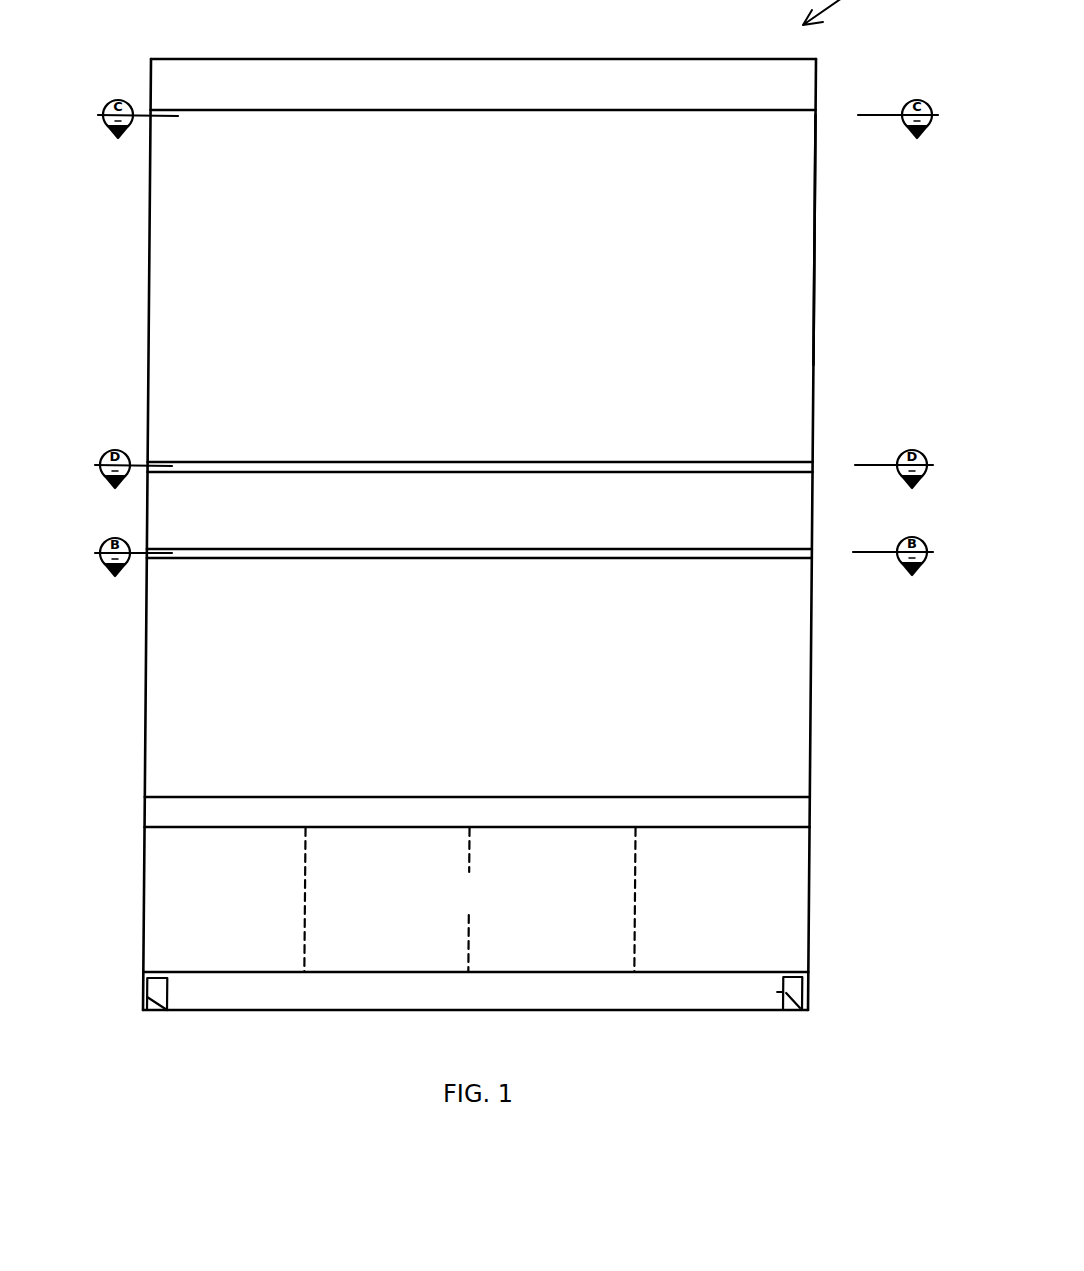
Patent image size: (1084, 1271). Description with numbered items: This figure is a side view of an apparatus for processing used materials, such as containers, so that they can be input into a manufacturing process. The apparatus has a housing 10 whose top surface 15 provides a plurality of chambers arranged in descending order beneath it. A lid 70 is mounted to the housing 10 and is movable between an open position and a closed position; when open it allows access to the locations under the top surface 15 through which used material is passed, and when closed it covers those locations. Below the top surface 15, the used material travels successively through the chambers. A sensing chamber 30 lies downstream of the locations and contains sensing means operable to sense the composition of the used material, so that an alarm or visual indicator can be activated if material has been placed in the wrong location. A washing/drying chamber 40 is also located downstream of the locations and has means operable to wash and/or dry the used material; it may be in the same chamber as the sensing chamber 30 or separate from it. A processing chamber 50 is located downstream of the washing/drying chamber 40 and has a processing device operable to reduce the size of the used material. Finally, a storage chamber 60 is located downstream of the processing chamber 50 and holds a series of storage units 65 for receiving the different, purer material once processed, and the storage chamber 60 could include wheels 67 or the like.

The housing 10 is at (140, 892).
The top surface 15 is at (605, 110).
The lid 70 is at (792, 87).
The sensing chamber 30 is at (850, 115).
The washing/drying chamber 40 is at (830, 208).
The processing chamber 50 is at (840, 582).
The storage chamber 60 is at (837, 800).
The storage units 65 is at (570, 937).
The wheels 67 is at (167, 1010).